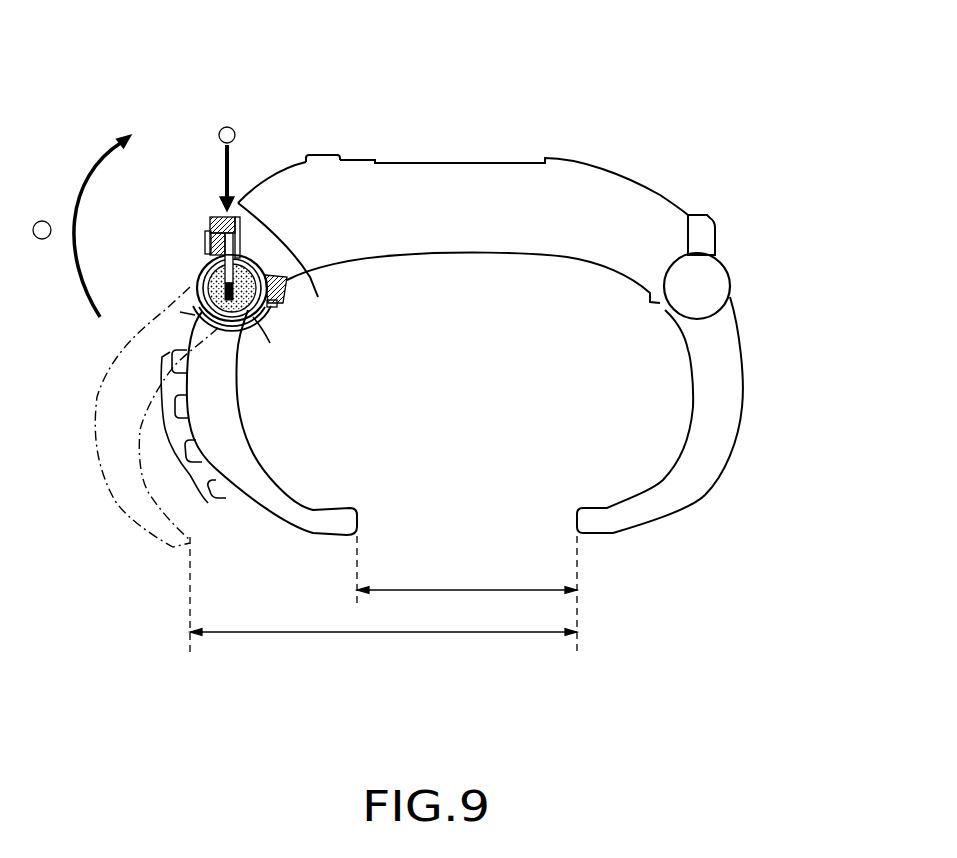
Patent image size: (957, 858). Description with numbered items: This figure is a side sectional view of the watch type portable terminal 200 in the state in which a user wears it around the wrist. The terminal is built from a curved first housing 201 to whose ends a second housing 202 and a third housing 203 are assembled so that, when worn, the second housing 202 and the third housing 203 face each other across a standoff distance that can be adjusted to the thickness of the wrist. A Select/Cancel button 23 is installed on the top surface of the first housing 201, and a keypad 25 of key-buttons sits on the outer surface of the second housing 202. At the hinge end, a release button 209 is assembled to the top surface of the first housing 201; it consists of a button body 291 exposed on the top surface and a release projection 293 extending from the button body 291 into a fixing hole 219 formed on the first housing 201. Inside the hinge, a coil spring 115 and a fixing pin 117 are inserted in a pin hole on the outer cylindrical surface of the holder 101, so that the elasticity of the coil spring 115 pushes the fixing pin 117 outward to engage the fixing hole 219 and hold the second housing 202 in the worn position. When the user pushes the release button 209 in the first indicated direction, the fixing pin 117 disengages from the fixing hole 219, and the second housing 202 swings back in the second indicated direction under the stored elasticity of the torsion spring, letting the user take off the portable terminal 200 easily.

The watch type portable terminal 200 is at (489, 59).
The first housing 201 is at (637, 152).
The Select/Cancel button 23 is at (321, 156).
The second housing 202 is at (250, 437).
The third housing 203 is at (748, 383).
The keypad 25 is at (168, 421).
The release button 209 is at (245, 254).
The button body 291 is at (220, 217).
The release projection 293 is at (213, 234).
The fixing hole 219 is at (213, 250).
The fixing pin 117 is at (200, 268).
The holder 101 is at (280, 293).
The coil spring 115 is at (247, 318).